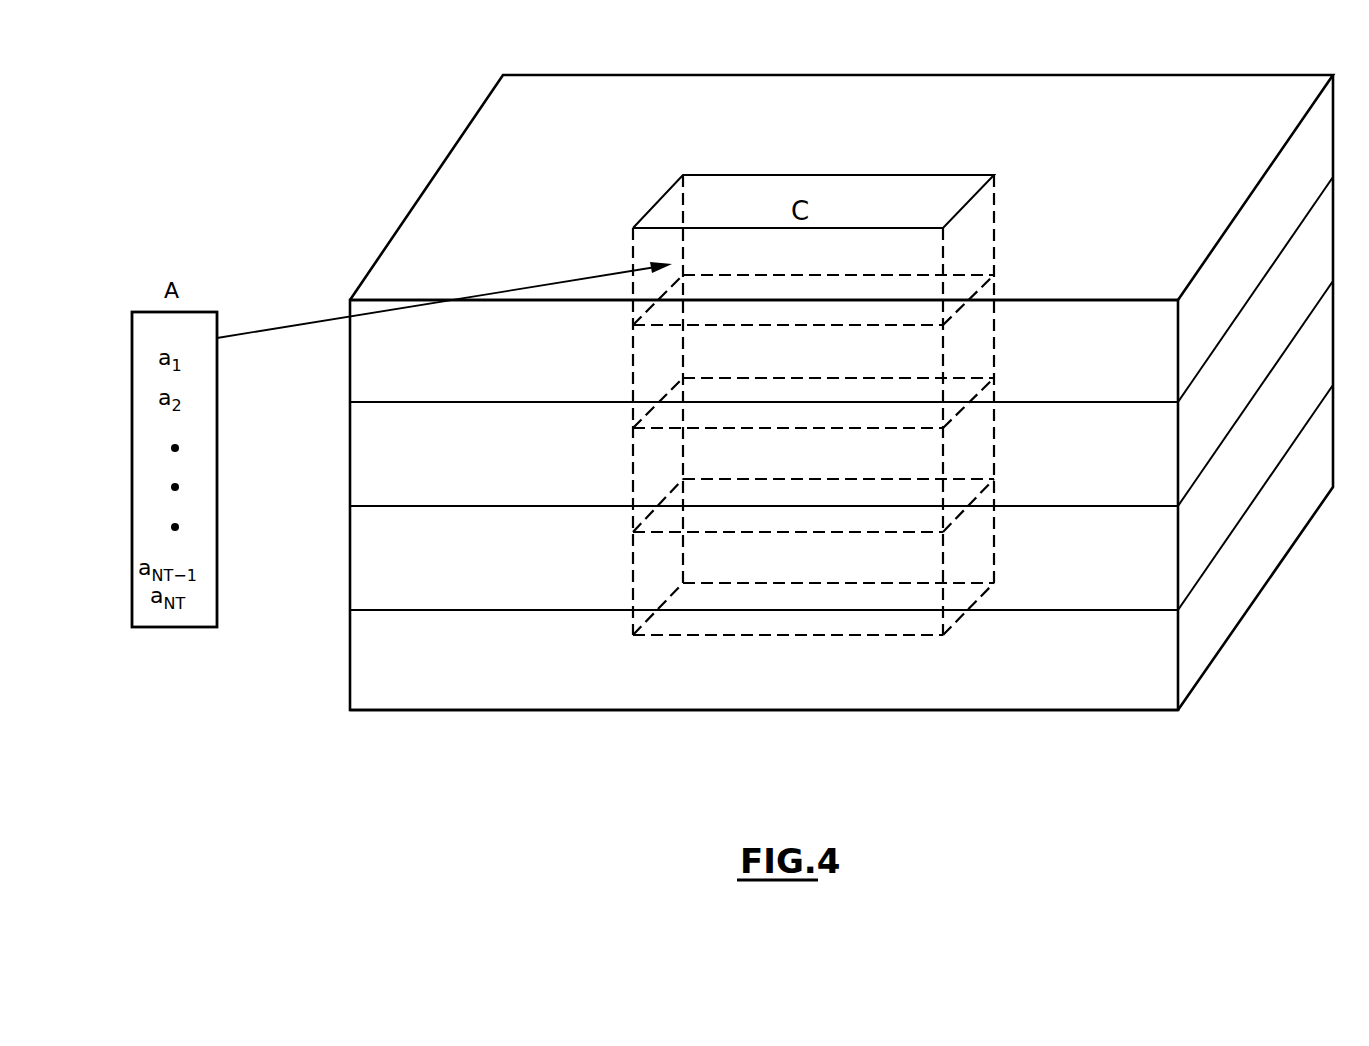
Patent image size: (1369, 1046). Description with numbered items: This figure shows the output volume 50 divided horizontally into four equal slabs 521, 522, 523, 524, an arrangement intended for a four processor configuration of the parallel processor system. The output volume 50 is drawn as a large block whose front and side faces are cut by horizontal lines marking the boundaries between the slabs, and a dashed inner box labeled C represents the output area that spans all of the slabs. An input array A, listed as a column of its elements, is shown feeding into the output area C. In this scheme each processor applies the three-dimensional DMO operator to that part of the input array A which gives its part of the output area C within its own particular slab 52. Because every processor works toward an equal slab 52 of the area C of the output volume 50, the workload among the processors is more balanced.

The output volume 50 is at (899, 93).
The slab 52 is at (799, 393).
The first slab 521 is at (378, 359).
The second slab 522 is at (378, 461).
The third slab 523 is at (378, 566).
The fourth slab 524 is at (378, 668).